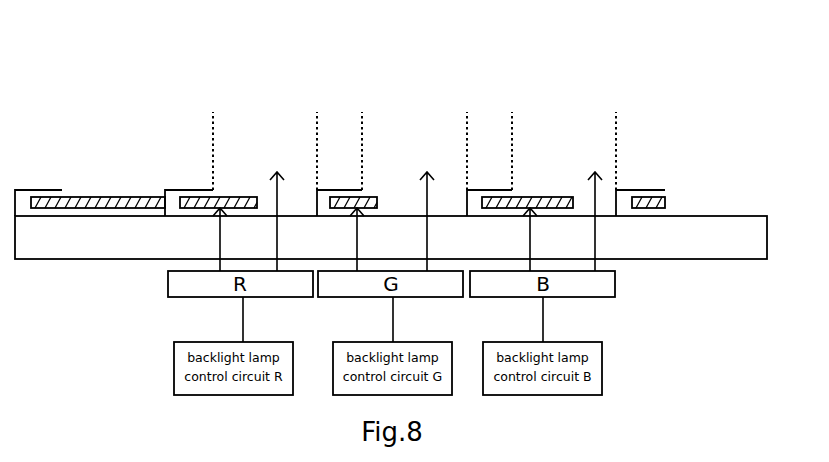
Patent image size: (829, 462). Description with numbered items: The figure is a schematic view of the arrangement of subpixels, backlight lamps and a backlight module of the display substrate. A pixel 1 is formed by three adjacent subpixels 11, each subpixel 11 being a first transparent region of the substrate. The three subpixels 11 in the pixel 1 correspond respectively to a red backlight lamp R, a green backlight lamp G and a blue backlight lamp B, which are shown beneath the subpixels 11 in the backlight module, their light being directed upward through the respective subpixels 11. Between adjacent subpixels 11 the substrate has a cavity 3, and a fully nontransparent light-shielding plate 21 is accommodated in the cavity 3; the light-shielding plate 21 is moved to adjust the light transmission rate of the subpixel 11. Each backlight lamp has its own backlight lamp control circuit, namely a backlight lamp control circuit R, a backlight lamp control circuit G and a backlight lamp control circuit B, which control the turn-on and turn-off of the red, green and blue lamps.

The pixel 1 is at (562, 60).
The subpixel 11 is at (213, 112).
The cavity 3 is at (50, 188).
The light-shielding plate 21 is at (113, 198).